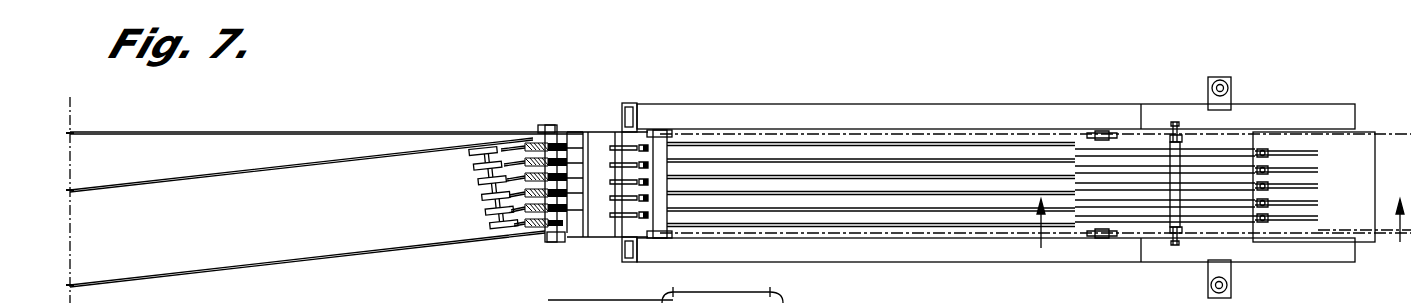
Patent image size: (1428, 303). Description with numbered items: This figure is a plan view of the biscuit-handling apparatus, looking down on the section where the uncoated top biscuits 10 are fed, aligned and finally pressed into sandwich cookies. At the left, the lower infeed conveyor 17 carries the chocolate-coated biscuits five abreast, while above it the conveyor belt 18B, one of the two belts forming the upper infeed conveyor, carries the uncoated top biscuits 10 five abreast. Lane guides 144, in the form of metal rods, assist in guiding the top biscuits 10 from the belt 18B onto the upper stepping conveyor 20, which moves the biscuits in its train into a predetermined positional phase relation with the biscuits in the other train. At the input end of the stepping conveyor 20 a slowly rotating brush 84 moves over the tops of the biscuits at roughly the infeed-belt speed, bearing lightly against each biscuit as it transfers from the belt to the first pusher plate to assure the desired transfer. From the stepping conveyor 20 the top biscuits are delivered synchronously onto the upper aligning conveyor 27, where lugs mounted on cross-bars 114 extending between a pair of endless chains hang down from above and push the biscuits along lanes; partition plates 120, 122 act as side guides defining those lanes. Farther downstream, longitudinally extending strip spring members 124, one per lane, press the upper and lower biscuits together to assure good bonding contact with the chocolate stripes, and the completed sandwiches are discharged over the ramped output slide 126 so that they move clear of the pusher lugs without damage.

The lower infeed conveyor 17 is at (296, 144).
The conveyor belt 18B is at (410, 293).
The stepping conveyor 20 is at (597, 137).
The upper aligning conveyor 27 is at (803, 129).
The brush 84 is at (563, 134).
The cross-bar 114 is at (512, 152).
The lane guide 144 is at (527, 208).
The partition plate 120 is at (915, 143).
The partition plate 122 is at (983, 160).
The strip spring member 124 is at (1240, 155).
The ramped output slide 126 is at (1361, 148).
The biscuit 10 is at (1215, 246).